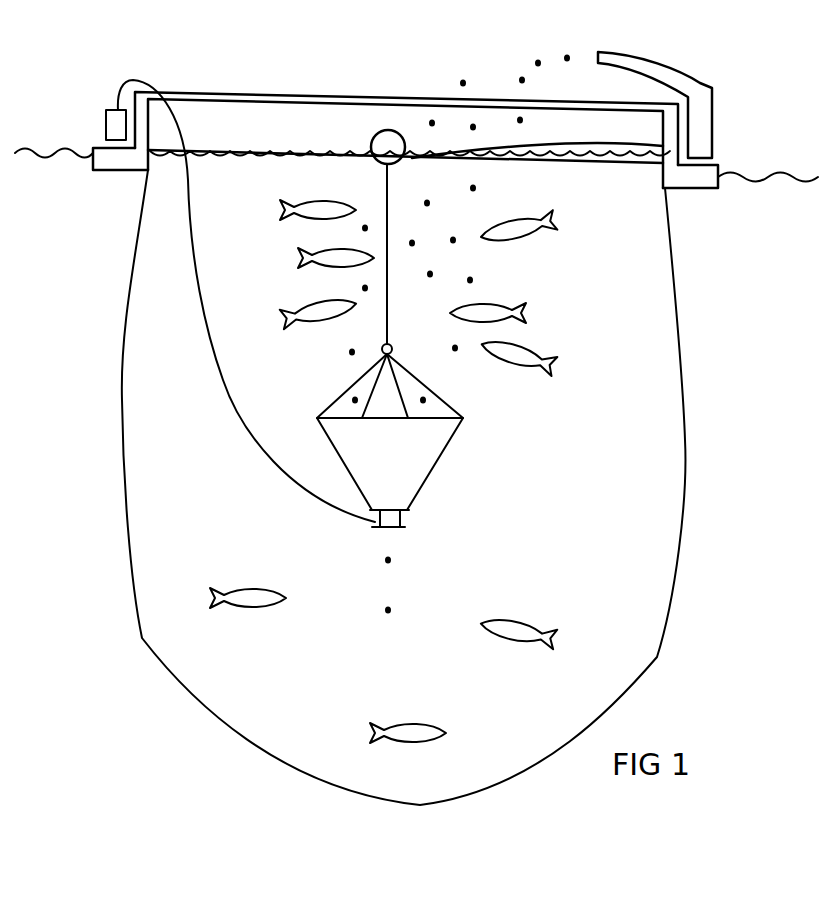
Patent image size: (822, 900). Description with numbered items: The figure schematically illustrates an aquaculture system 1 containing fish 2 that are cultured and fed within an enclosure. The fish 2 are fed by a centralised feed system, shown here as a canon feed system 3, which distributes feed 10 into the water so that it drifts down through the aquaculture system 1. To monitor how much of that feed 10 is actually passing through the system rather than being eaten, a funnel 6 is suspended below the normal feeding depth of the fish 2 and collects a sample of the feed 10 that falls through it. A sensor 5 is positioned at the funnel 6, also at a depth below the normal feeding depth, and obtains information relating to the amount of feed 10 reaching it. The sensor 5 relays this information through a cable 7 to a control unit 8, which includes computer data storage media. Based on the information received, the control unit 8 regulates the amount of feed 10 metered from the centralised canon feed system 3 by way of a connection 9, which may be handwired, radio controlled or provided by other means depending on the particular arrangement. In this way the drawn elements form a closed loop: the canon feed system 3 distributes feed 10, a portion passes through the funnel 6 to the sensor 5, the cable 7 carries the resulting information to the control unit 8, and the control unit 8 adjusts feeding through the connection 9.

The aquaculture system 1 is at (95, 417).
The fish 2 is at (520, 352).
The canon feed system 3 is at (703, 110).
The sensor 5 is at (400, 521).
The funnel 6 is at (418, 453).
The cable 7 is at (192, 235).
The control unit 8 is at (106, 125).
The connection 9 is at (293, 95).
The feed 10 is at (492, 75).